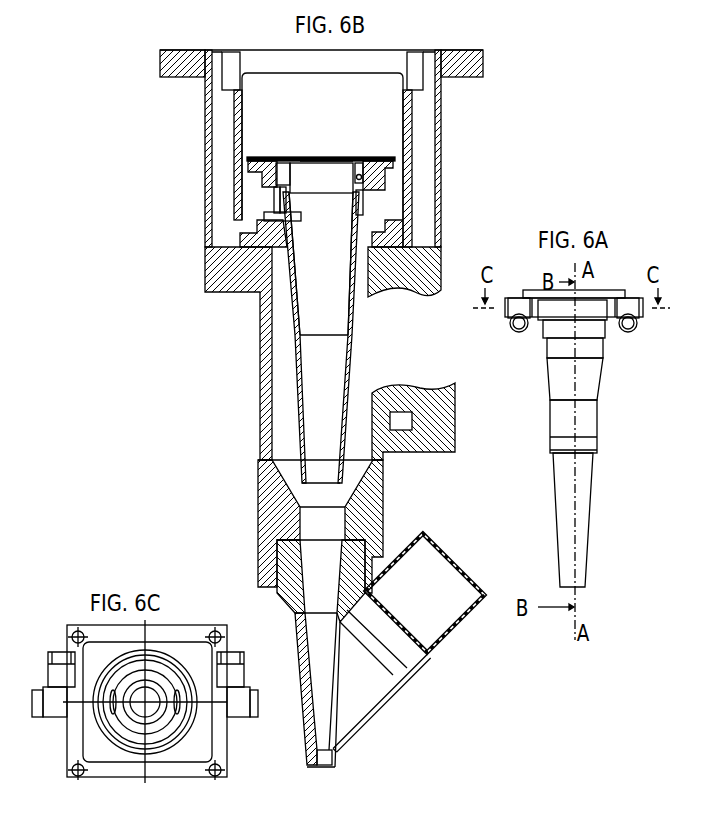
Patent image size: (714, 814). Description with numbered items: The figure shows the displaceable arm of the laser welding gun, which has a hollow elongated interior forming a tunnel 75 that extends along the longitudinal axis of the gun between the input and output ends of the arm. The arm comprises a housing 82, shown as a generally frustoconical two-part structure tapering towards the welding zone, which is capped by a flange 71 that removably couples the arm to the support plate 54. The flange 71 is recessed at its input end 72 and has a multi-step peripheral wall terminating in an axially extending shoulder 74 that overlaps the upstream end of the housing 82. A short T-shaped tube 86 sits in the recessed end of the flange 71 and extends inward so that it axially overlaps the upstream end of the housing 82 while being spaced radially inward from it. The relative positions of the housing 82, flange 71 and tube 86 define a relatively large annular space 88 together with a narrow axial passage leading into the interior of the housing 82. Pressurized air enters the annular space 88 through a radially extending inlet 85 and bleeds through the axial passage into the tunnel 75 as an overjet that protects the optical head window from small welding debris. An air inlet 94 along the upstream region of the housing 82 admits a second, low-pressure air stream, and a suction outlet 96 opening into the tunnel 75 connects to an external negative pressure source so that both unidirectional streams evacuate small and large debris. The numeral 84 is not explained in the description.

In FIG. 6B, the support plate 54 is at (313, 157).
In FIG. 6B, the flange 71 is at (277, 160).
In FIG. 6A, the flange 71 is at (535, 291).
In FIG. 6B, the input end 72 is at (368, 157).
In FIG. 6B, the shoulder 74 is at (263, 172).
In FIG. 6B, the tunnel 75 is at (288, 305).
In FIG. 6A, the tunnel 75 is at (609, 502).
In FIG. 6B, the housing 82 is at (353, 307).
In FIG. 6A, the housing 82 is at (593, 477).
In FIG. 6B, the outlet passage 84 is at (343, 199).
In FIG. 6A, the inlet 85 is at (628, 298).
In FIG. 6B, the T-shaped tube 86 is at (352, 175).
In FIG. 6B, the annular space 88 is at (343, 158).
In FIG. 6B, the air inlet 94 is at (263, 220).
In FIG. 6B, the suction outlet 96 is at (363, 188).